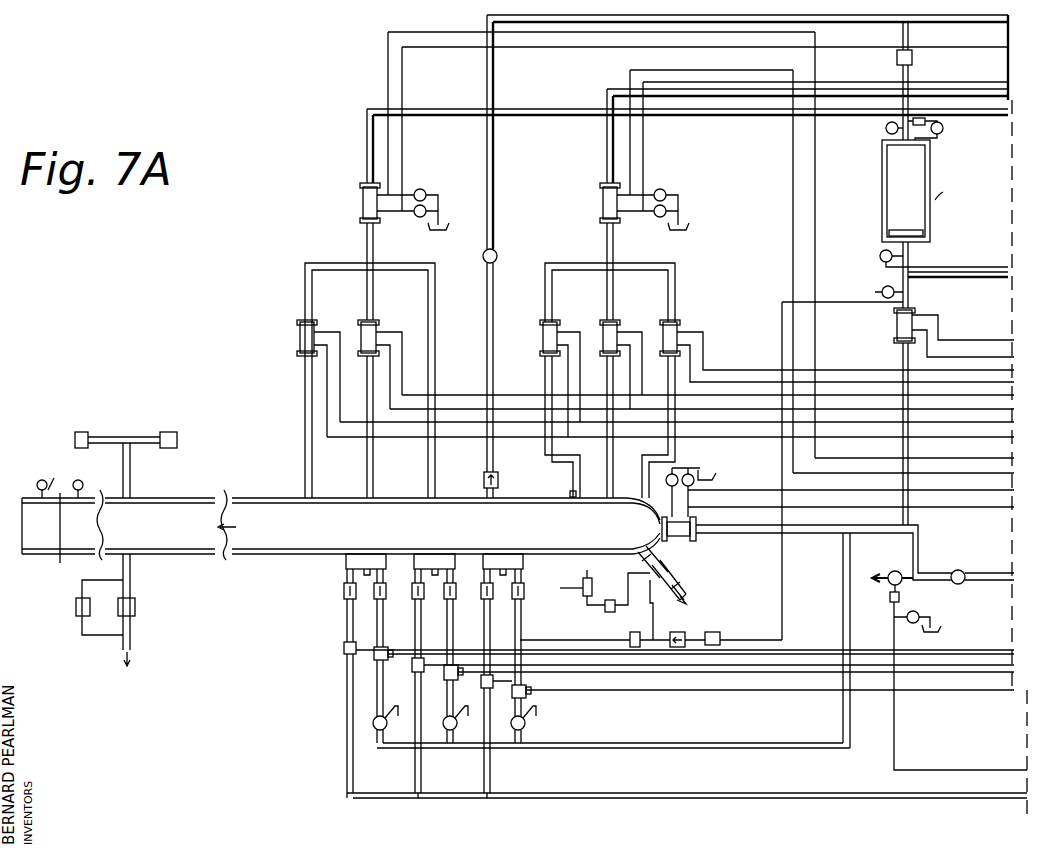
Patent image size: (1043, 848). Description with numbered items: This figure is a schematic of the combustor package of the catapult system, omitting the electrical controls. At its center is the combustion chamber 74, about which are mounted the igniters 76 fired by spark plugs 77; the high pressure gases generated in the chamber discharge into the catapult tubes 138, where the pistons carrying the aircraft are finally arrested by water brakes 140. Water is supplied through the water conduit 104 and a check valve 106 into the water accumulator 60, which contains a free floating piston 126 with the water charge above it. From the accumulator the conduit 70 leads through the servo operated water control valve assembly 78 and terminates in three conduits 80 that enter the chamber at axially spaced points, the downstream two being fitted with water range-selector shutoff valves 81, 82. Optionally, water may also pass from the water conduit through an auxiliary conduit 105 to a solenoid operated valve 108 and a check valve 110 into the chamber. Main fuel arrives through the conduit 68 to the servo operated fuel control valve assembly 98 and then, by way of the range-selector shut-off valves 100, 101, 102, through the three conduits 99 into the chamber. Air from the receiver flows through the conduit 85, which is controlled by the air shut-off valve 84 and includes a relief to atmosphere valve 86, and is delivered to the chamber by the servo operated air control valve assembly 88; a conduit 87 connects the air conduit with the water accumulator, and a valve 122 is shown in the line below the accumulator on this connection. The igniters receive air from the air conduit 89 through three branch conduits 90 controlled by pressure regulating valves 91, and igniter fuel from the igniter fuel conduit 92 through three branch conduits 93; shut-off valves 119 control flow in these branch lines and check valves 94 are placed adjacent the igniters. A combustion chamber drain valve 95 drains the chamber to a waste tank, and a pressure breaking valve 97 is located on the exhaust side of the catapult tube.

The water accumulator 60 is at (913, 185).
The conduit 68 is at (619, 90).
The conduit 70 is at (518, 116).
The combustion chamber 74 is at (522, 526).
The group of igniters 76 is at (435, 541).
The spark plugs 77 is at (386, 566).
The servo operated water control valve assembly 78 is at (360, 206).
The conduits 80 is at (305, 460).
The water range-selector shutoff valve 81 is at (361, 332).
The water range-selector shutoff valve 82 is at (300, 328).
The air shut-off valve 84 is at (965, 572).
The conduit 85 is at (828, 542).
The relief to atmosphere valve 86 is at (888, 590).
The conduit 87 is at (989, 286).
The servo operated air control valve assembly 88 is at (690, 542).
The air conduit 89 is at (742, 740).
The branch conduits 90 is at (448, 620).
The pressure regulating valves 91 is at (525, 723).
The igniter fuel conduit 92 is at (748, 797).
The branch conduits 93 is at (347, 773).
The check valves 94 is at (344, 588).
The combustion chamber drain valve 95 is at (660, 570).
The pressure breaking valve 97 is at (135, 607).
The servo operated fuel control valve assembly 98 is at (600, 206).
The conduits 99 is at (592, 285).
The range-selector shut-off valve 100 is at (680, 332).
The range-selector shut-off valve 101 is at (619, 331).
The range-selector shut-off valve 102 is at (559, 330).
The water conduit 104 is at (967, 22).
The auxiliary conduit 105 is at (872, 22).
The check valve 106 is at (913, 60).
The solenoid operated valve 108 is at (497, 256).
The check valve 110 is at (498, 480).
The shut-off valves 119 is at (356, 660).
The valve 122 is at (894, 330).
The free floating piston 126 is at (909, 230).
The catapult tubes 138 is at (172, 536).
The water brakes 140 is at (46, 536).